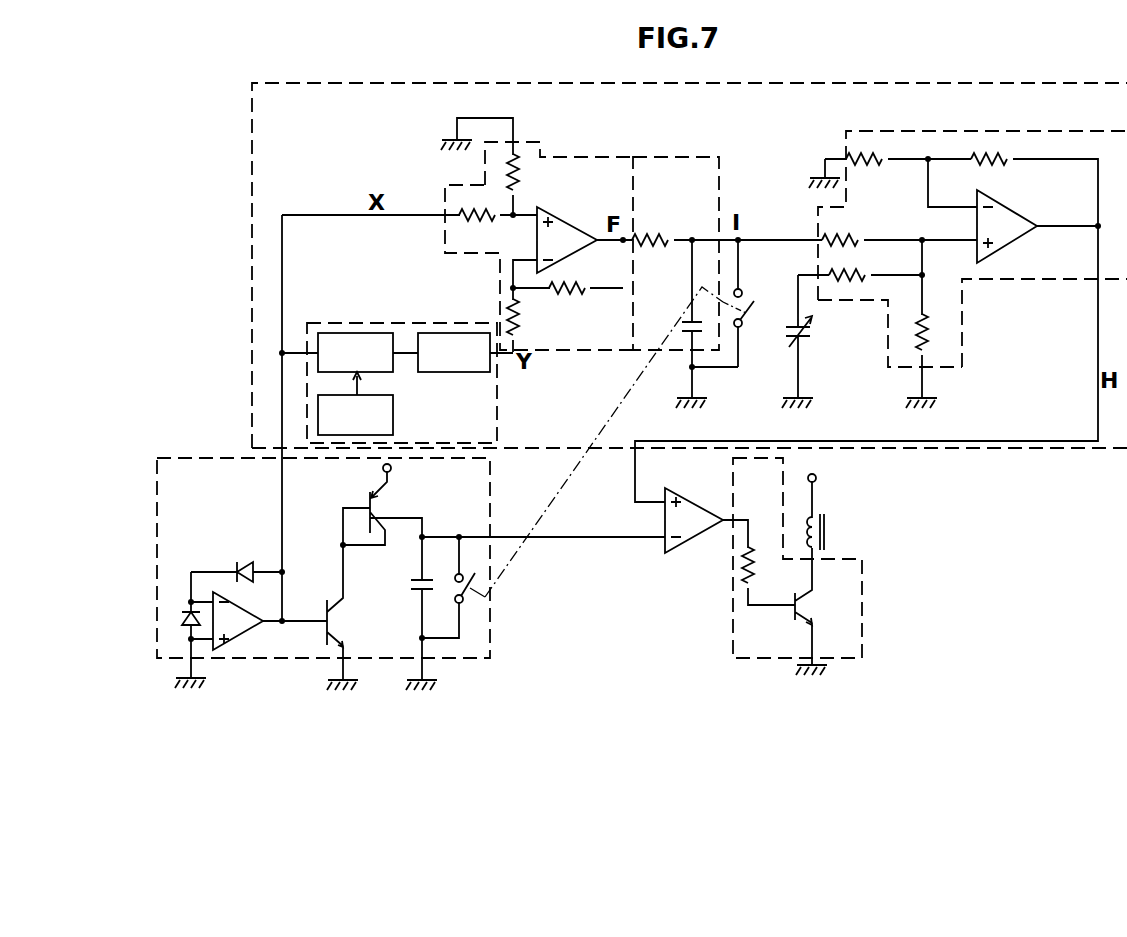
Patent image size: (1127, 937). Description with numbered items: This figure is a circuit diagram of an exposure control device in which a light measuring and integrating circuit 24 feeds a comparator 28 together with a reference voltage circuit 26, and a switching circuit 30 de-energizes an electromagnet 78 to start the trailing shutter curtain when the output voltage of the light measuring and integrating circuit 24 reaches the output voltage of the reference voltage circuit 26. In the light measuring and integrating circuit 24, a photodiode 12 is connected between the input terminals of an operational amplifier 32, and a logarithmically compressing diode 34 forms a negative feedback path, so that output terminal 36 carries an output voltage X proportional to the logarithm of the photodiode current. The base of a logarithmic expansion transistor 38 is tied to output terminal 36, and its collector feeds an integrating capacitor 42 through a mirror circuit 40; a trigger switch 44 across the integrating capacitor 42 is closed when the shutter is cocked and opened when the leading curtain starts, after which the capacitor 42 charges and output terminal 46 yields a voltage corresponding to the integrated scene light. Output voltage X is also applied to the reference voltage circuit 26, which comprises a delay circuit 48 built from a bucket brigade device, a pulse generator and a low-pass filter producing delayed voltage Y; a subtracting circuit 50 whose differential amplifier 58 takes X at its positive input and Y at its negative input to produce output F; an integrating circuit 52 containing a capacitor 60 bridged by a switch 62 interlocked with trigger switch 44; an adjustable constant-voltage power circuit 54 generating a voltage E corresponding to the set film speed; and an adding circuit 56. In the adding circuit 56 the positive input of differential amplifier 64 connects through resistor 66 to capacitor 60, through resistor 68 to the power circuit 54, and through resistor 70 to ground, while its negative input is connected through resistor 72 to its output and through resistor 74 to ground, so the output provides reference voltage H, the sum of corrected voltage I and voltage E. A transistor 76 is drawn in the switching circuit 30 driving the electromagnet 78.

The photodiode 12 is at (182, 624).
The light measuring and integrating circuit 24 is at (217, 449).
The reference voltage circuit 26 is at (248, 294).
The comparator 28 is at (693, 543).
The switching circuit 30 is at (871, 585).
The operational amplifier 32 is at (236, 639).
The logarithmically compressing diode 34 is at (245, 562).
The output terminal 36 is at (286, 627).
The logarithmic expansion transistor 38 is at (329, 609).
The mirror circuit 40 is at (380, 491).
The integrating capacitor 42 is at (416, 590).
The trigger switch 44 is at (466, 599).
The output terminal 46 is at (543, 540).
The delay circuit 48 is at (355, 322).
The subtracting circuit 50 is at (546, 149).
The integrating circuit 52 is at (641, 156).
The adjustable constant-voltage power circuit 54 is at (802, 337).
The adding circuit 56 is at (921, 131).
The differential amplifier 58 is at (562, 230).
The capacitor 60 is at (690, 320).
The switch 62 is at (747, 308).
The differential amplifier 64 is at (1005, 222).
The resistor 66 is at (843, 238).
The resistor 68 is at (852, 280).
The resistor 70 is at (925, 331).
The resistor 72 is at (992, 156).
The resistor 74 is at (868, 156).
The transistor 76 is at (793, 608).
The electromagnet 78 is at (826, 528).